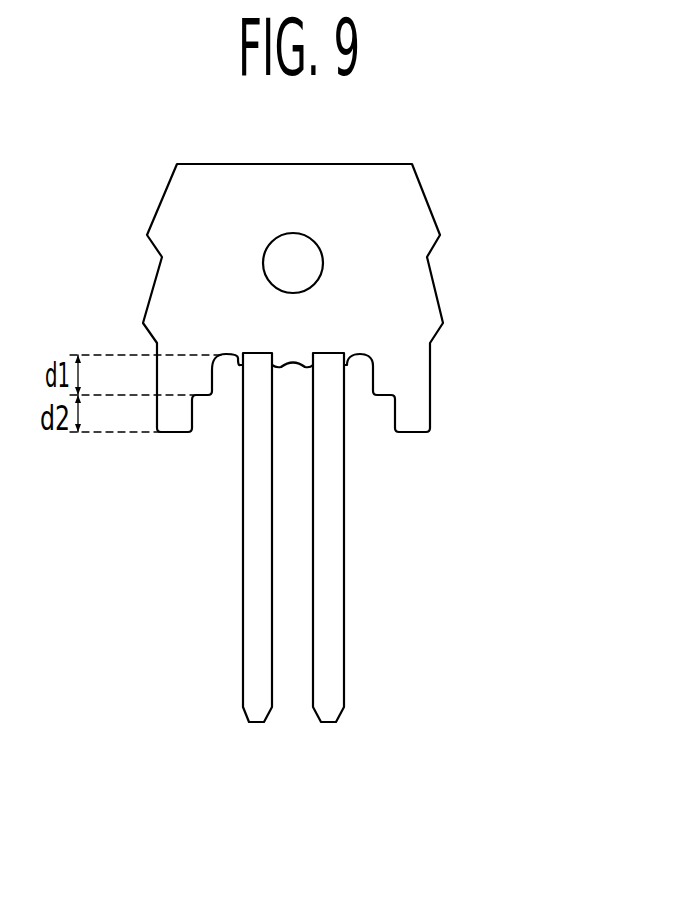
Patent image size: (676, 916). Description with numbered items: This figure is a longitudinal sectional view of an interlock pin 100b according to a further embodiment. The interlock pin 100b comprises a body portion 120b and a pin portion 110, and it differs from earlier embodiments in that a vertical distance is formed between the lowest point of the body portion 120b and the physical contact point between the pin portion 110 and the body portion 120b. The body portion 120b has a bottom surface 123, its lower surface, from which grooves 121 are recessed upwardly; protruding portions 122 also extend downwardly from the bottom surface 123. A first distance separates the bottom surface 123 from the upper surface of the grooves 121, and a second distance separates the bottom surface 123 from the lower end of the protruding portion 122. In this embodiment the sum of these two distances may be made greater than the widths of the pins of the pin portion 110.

The interlock pin 100b is at (338, 145).
The pin portion 110 is at (344, 605).
The body portion 120b is at (413, 302).
The grooves 121 is at (294, 362).
The protruding portions 122 is at (173, 435).
The bottom surface 123 is at (385, 398).